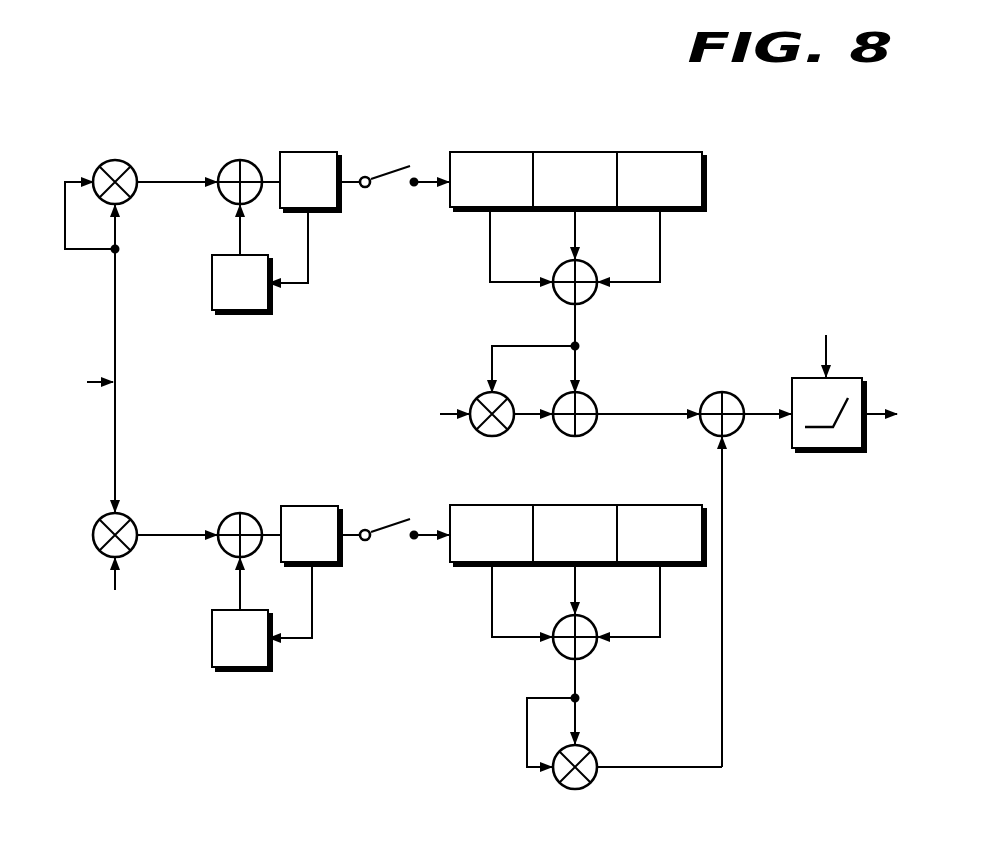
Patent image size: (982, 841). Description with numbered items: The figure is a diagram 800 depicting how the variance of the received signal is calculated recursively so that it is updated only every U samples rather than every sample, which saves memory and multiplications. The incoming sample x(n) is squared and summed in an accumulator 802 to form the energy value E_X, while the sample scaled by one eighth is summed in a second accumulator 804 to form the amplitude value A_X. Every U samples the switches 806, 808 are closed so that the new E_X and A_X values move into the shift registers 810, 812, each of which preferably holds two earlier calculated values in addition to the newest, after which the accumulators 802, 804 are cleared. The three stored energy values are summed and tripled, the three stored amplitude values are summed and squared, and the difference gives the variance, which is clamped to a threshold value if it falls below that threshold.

The diagram 800 is at (762, 109).
The accumulator 802 is at (307, 150).
The accumulator 804 is at (308, 504).
The switch 806 is at (386, 163).
The switch 808 is at (386, 517).
The shift register 810 is at (577, 150).
The shift register 812 is at (634, 503).